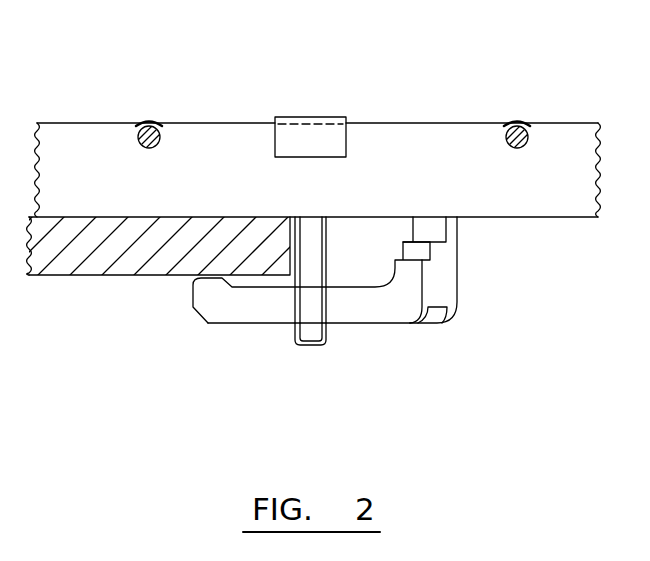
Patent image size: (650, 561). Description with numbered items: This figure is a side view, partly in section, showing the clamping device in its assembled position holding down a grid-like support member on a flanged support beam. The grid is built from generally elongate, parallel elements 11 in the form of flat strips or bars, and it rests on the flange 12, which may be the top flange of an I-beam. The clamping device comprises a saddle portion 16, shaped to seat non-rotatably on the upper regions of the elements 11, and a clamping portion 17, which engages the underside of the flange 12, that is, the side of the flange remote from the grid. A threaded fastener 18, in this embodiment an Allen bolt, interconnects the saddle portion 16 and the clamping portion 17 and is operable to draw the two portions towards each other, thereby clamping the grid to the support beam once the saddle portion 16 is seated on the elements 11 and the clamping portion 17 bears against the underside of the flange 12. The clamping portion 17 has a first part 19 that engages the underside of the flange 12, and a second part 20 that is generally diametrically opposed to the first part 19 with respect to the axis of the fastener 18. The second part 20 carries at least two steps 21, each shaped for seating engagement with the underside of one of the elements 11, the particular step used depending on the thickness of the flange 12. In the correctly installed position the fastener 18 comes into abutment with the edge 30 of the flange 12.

The elongate elements 11 is at (553, 163).
The flange 12 is at (92, 262).
The saddle portion 16 is at (315, 117).
The clamping portion 17 is at (372, 345).
The threaded fastener 18 is at (315, 248).
The first part 19 is at (217, 303).
The second part 20 is at (450, 268).
The steps 21 is at (427, 228).
The edge 30 is at (292, 250).